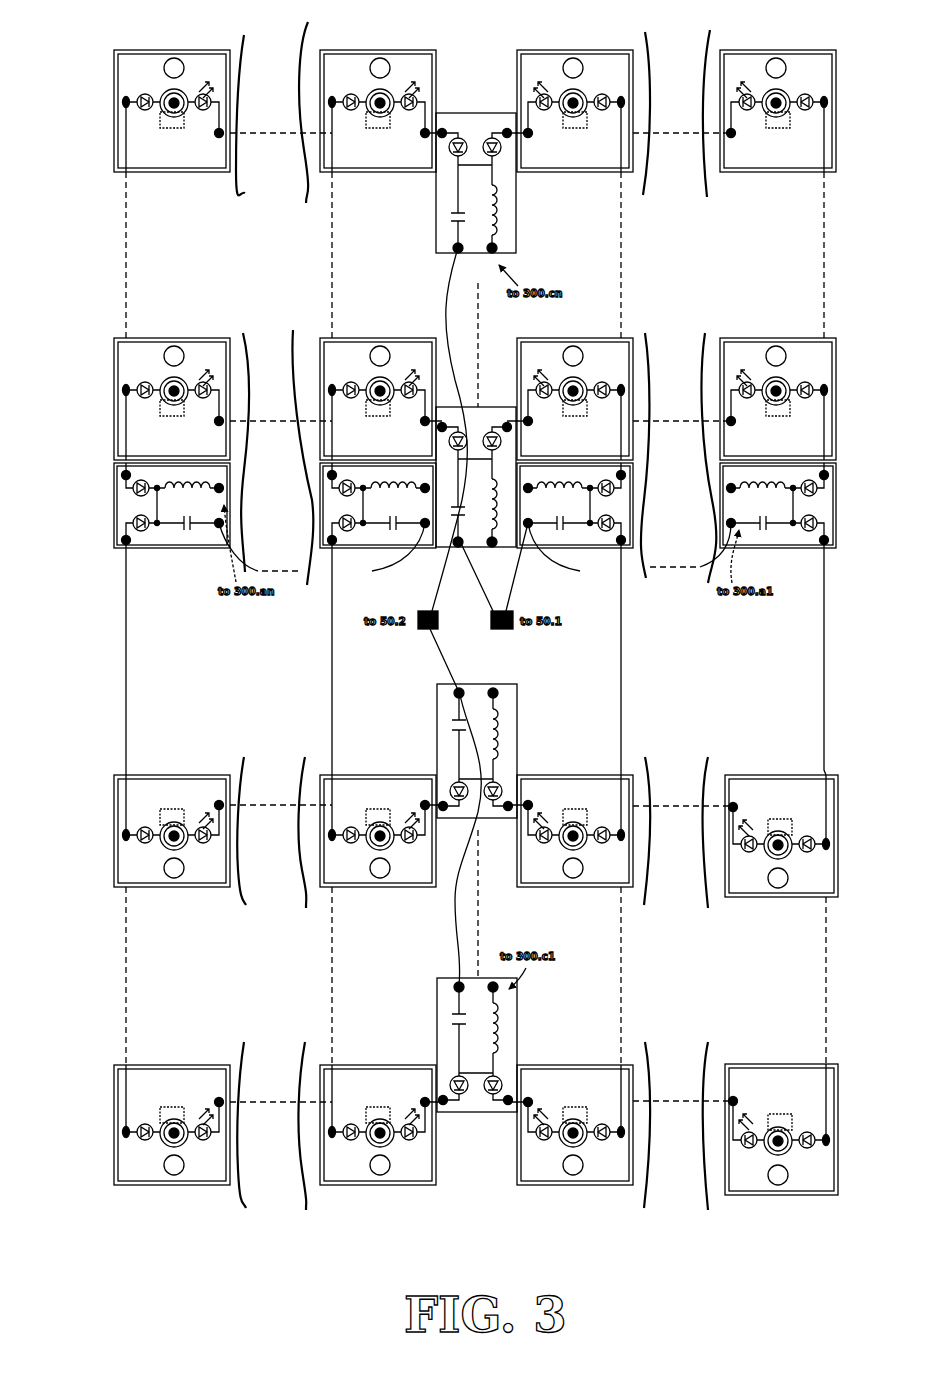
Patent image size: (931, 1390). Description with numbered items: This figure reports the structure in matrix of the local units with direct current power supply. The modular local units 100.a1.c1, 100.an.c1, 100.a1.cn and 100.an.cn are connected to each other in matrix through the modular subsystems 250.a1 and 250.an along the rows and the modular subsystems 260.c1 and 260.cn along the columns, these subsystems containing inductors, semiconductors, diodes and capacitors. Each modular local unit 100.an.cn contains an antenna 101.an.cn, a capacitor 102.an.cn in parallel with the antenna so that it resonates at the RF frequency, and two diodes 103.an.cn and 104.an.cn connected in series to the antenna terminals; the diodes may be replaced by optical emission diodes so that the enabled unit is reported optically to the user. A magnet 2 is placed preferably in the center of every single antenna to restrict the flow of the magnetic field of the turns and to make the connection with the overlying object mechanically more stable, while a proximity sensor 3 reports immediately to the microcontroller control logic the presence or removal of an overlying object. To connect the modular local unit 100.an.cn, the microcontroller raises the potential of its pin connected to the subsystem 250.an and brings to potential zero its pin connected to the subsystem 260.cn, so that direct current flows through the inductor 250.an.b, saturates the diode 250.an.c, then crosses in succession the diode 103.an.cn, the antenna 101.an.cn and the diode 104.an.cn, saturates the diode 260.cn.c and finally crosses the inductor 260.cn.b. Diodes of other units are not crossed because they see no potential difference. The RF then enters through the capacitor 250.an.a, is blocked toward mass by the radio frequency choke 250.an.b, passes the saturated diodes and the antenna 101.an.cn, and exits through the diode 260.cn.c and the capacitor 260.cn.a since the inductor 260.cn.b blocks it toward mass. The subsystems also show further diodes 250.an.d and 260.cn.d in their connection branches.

The magnet 2 is at (165, 70).
The proximity sensor 3 is at (182, 55).
The modular local unit 100.an.cn is at (146, 115).
The antenna 101.an.cn is at (202, 153).
The capacitor 102.an.cn is at (161, 155).
The diode 103.an.cn is at (123, 61).
The diode 104.an.cn is at (228, 61).
The modular local unit 100.a1.cn is at (785, 155).
The modular local unit 100.an.c1 is at (205, 1083).
The modular local unit 100.a1.c1 is at (797, 1083).
The modular subsystem 250.an is at (137, 552).
The capacitor 250.an.a is at (176, 579).
The inductor 250.an.b is at (203, 550).
The diode 250.an.c is at (91, 500).
The second diode 250.an.d is at (91, 540).
The modular subsystem 250.a1 is at (780, 550).
The modular subsystem 260.cn is at (480, 150).
The capacitor 260.cn.a is at (421, 230).
The inductor 260.cn.b is at (540, 218).
The diode 260.cn.c is at (464, 92).
The second terminal 260.cn.d is at (491, 105).
The modular subsystem 260.c1 is at (442, 1000).